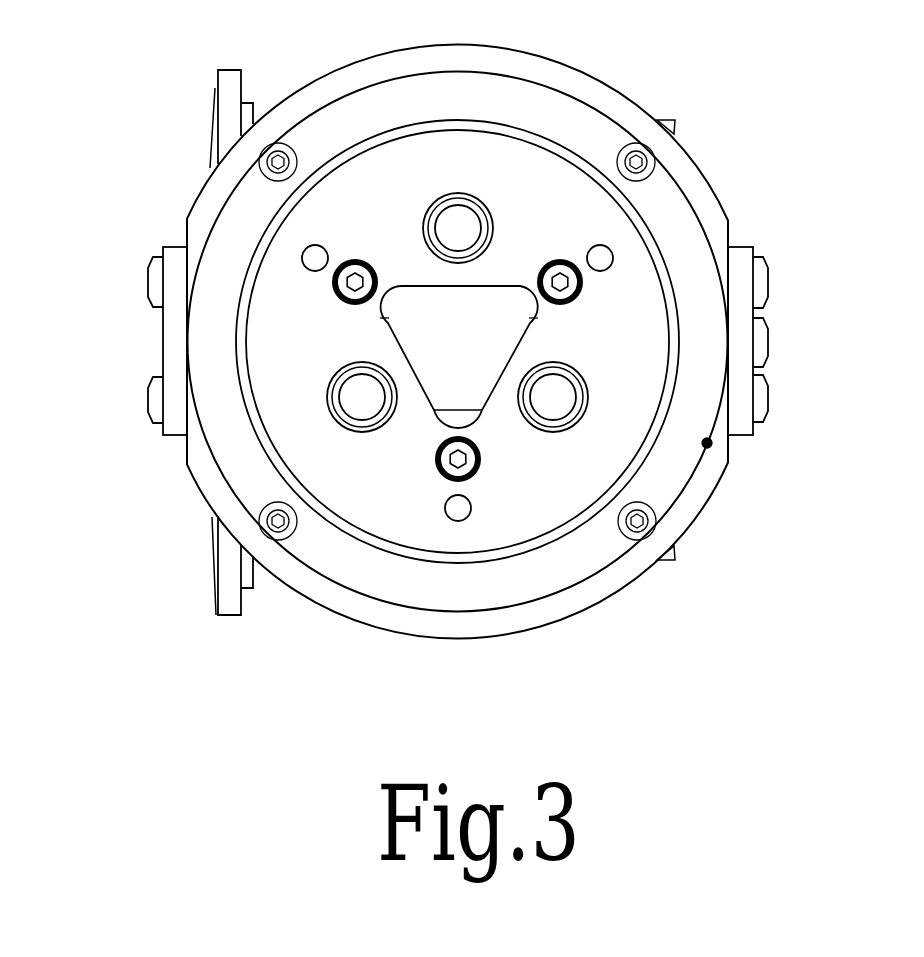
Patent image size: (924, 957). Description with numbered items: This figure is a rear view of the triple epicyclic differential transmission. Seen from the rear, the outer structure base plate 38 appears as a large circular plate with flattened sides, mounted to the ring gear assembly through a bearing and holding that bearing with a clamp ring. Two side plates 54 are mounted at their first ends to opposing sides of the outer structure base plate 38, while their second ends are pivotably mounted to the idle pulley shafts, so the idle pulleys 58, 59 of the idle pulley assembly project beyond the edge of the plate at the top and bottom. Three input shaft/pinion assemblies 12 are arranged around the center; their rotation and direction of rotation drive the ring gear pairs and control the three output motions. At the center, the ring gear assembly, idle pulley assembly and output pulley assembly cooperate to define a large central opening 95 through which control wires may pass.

The input shaft/pinion assembly 12 is at (565, 407).
The outer structure base plate 38 is at (713, 182).
The side plate 54 is at (162, 247).
The idle pulley 58 is at (207, 542).
The idle pulley 59 is at (672, 120).
The central opening 95 is at (473, 312).